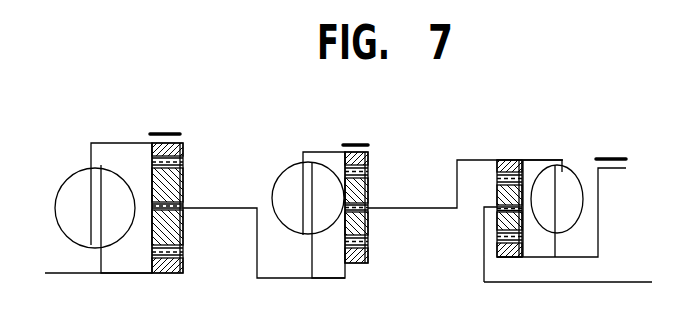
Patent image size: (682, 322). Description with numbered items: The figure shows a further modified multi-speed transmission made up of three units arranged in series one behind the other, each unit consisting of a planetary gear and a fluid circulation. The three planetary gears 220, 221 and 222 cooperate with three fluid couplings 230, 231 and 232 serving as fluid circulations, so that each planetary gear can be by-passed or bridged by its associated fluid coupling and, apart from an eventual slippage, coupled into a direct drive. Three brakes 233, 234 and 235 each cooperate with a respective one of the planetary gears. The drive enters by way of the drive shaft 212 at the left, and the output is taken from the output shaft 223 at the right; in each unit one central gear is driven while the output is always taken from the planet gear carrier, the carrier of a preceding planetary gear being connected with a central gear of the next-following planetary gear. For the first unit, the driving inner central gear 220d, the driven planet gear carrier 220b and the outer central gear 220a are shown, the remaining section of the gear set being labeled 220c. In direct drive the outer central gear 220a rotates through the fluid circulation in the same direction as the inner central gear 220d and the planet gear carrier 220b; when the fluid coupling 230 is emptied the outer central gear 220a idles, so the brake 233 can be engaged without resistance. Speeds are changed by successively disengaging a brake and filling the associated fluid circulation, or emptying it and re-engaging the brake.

The drive shaft 212 is at (66, 275).
The planetary gear 220 is at (200, 204).
The outer central gear 220a is at (185, 143).
The planet gear carrier 220b is at (210, 212).
The coupling hub 220c is at (168, 228).
The inner central gear 220d is at (177, 274).
The planetary gear 221 is at (374, 199).
The planetary gear 222 is at (486, 199).
The output shaft 223 is at (588, 284).
The fluid coupling 230 is at (100, 195).
The fluid coupling 231 is at (308, 188).
The fluid coupling 232 is at (559, 193).
The brake 233 is at (158, 131).
The brake 234 is at (362, 143).
The brake 235 is at (613, 158).